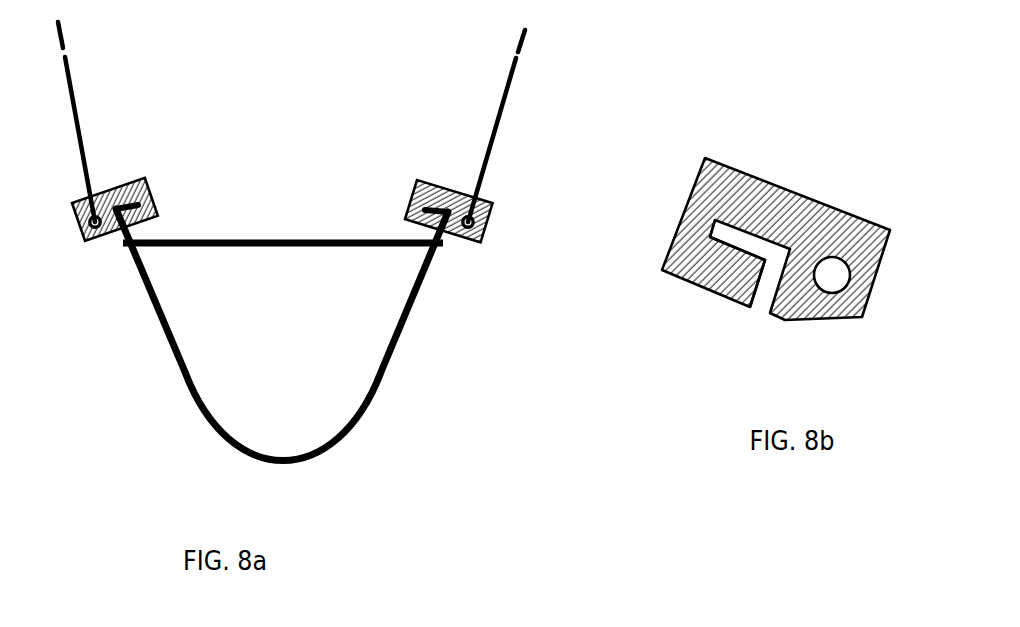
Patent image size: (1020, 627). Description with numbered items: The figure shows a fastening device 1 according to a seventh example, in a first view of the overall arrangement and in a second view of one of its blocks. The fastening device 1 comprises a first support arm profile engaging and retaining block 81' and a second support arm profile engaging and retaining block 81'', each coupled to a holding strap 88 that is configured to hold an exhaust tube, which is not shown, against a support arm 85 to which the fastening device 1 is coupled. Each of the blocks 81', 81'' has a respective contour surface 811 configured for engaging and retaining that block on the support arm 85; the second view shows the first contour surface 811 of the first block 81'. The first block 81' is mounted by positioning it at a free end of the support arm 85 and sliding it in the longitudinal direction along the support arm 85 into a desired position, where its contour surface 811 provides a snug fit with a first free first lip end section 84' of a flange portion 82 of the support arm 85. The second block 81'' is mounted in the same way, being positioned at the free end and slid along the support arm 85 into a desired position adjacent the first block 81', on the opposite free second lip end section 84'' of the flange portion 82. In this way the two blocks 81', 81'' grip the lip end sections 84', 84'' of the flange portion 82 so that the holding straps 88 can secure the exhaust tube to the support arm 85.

In FIG. 8a, the fastening device 1 is at (180, 182).
In FIG. 8b, the fastening device 1 is at (689, 118).
In FIG. 8a, the first support arm profile engaging and retaining block 81' is at (462, 239).
In FIG. 8b, the first support arm profile engaging and retaining block 81' is at (776, 269).
In FIG. 8a, the second support arm profile engaging and retaining block 81'' is at (115, 264).
In FIG. 8b, the first contour surface 811 is at (748, 250).
In FIG. 8a, the flange portion 82 is at (416, 226).
In FIG. 8a, the first free first lip end section 84' is at (406, 176).
In FIG. 8a, the free second lip end section 84'' is at (124, 169).
In FIG. 8a, the support arm 85 is at (380, 387).
In FIG. 8a, the holding strap 88 is at (502, 103).